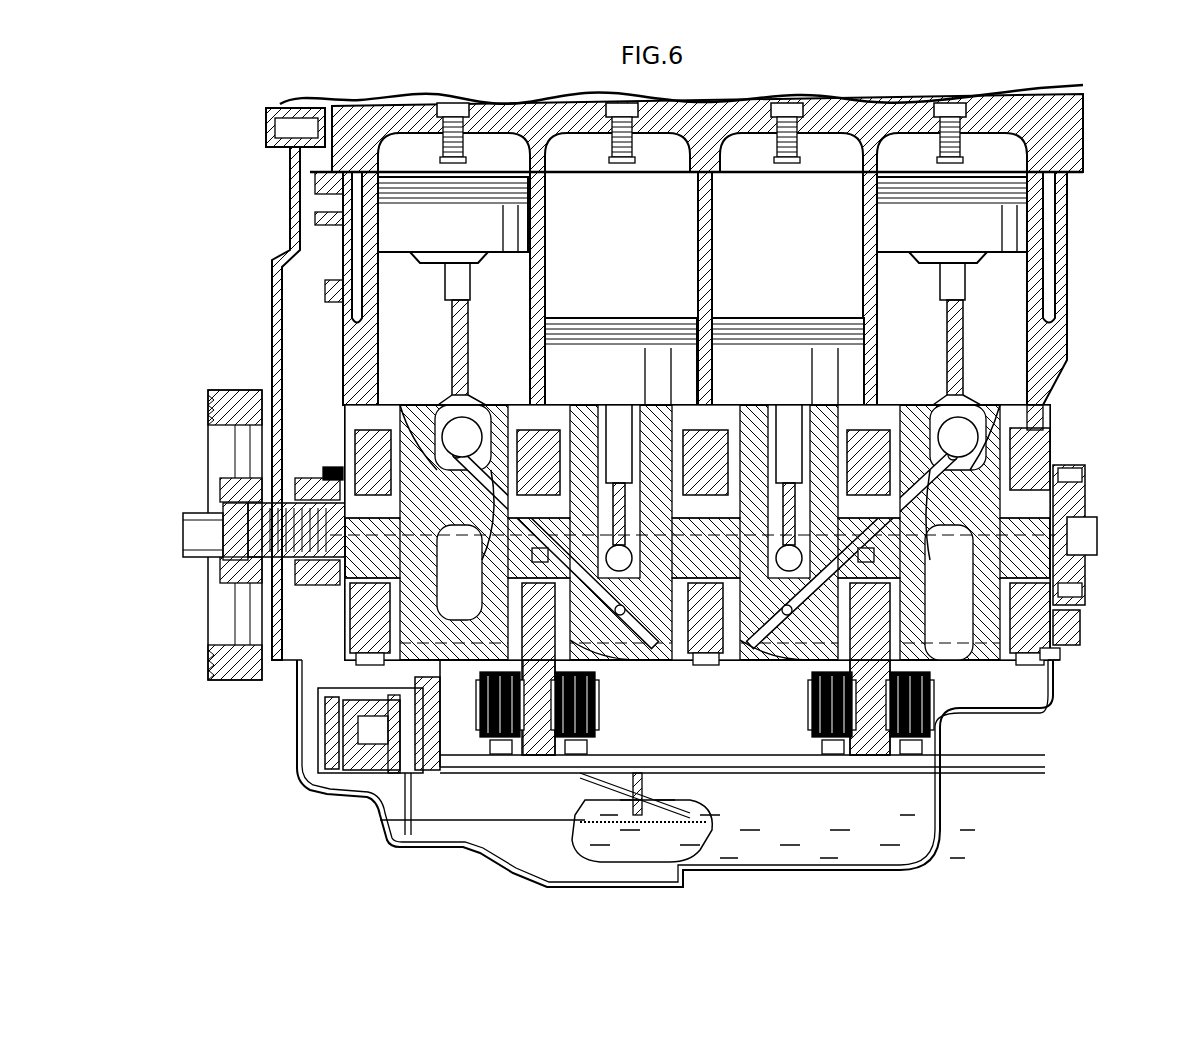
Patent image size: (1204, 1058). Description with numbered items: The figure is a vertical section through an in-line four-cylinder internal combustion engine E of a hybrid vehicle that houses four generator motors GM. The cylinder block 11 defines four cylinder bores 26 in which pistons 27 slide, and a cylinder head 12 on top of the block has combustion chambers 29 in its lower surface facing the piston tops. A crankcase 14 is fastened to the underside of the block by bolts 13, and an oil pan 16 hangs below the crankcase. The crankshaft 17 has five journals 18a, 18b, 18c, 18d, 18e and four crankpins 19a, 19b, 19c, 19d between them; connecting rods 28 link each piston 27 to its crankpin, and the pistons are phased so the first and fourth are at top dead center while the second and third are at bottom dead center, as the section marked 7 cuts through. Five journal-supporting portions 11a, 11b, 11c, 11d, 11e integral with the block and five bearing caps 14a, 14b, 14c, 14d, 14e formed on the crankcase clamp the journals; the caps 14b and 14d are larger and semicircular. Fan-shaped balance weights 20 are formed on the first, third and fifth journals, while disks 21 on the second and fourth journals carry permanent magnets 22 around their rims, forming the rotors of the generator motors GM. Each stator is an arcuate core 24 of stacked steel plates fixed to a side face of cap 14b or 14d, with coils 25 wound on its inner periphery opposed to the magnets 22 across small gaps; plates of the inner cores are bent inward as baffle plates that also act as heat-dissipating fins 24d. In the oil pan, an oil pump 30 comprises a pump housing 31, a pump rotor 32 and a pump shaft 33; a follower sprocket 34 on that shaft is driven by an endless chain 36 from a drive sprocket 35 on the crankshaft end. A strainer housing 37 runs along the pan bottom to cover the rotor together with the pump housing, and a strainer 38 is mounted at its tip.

The internal combustion engine E is at (1088, 280).
The section line VII 7 is at (688, 273).
The cylinder block 11 is at (1052, 352).
The journal-supporting portion 11a is at (348, 427).
The journal-supporting portion 11b is at (527, 460).
The journal-supporting portion 11c is at (712, 520).
The journal-supporting portion 11d is at (870, 437).
The journal-supporting portion 11e is at (1053, 457).
The cylinder head 12 is at (1073, 151).
The bolts 13 is at (497, 543).
The crankcase 14 is at (1085, 624).
The bearing cap 14a is at (410, 600).
The bearing cap 14b is at (555, 650).
The bearing cap 14c is at (690, 605).
The bearing cap 14d is at (867, 767).
The bearing cap 14e is at (1058, 662).
The oil pan 16 is at (942, 832).
The crankshaft 17 is at (1090, 496).
The journal 18a is at (393, 521).
The journal 18b is at (568, 521).
The journal 18c is at (720, 519).
The journal 18d is at (885, 517).
The journal 18e is at (1052, 527).
The crankpin 19a is at (407, 388).
The crankpin 19b is at (612, 652).
The crankpin 19c is at (748, 673).
The crankpin 19d is at (998, 388).
The balance weight 20 is at (668, 390).
The disk 21 is at (625, 405).
The permanent magnets 22 is at (498, 378).
The core 24 is at (500, 755).
The heat-dissipating fins 24d is at (653, 764).
The coils 25 is at (990, 683).
The cylinder bore 26 is at (546, 228).
The piston 27 is at (472, 238).
The connecting rod 28 is at (462, 292).
The combustion chamber 29 is at (495, 152).
The oil pump 30 is at (360, 788).
The pump housing 31 is at (405, 762).
The pump rotor 32 is at (405, 805).
The pump shaft 33 is at (375, 730).
The follower sprocket 34 is at (323, 728).
The drive sprocket 35 is at (337, 485).
The endless chain 36 is at (245, 680).
The strainer housing 37 is at (480, 827).
The strainer 38 is at (683, 853).
The generator motor GM is at (612, 712).